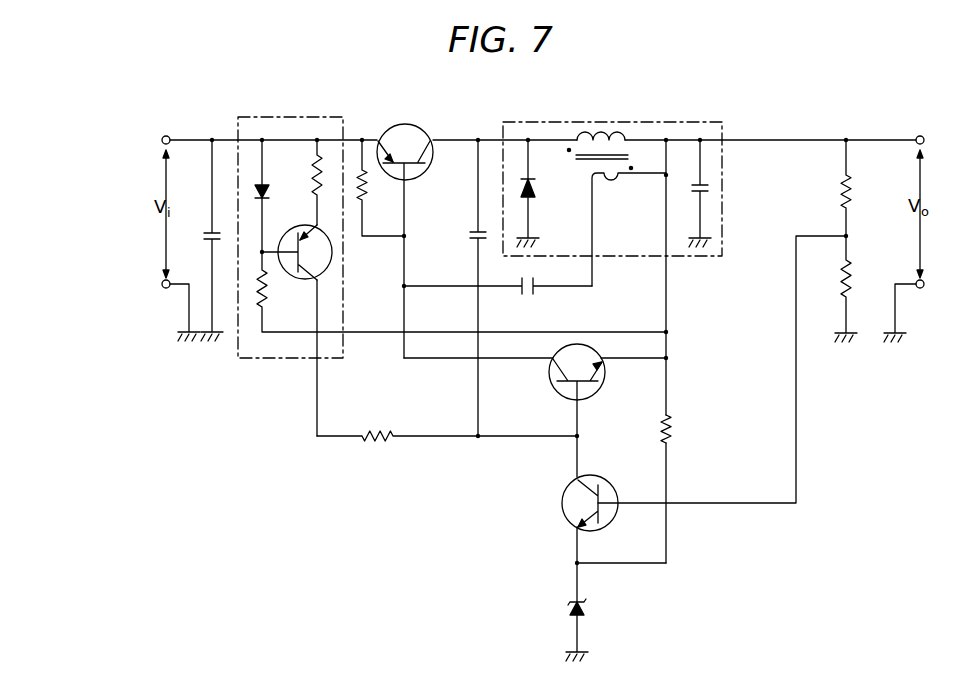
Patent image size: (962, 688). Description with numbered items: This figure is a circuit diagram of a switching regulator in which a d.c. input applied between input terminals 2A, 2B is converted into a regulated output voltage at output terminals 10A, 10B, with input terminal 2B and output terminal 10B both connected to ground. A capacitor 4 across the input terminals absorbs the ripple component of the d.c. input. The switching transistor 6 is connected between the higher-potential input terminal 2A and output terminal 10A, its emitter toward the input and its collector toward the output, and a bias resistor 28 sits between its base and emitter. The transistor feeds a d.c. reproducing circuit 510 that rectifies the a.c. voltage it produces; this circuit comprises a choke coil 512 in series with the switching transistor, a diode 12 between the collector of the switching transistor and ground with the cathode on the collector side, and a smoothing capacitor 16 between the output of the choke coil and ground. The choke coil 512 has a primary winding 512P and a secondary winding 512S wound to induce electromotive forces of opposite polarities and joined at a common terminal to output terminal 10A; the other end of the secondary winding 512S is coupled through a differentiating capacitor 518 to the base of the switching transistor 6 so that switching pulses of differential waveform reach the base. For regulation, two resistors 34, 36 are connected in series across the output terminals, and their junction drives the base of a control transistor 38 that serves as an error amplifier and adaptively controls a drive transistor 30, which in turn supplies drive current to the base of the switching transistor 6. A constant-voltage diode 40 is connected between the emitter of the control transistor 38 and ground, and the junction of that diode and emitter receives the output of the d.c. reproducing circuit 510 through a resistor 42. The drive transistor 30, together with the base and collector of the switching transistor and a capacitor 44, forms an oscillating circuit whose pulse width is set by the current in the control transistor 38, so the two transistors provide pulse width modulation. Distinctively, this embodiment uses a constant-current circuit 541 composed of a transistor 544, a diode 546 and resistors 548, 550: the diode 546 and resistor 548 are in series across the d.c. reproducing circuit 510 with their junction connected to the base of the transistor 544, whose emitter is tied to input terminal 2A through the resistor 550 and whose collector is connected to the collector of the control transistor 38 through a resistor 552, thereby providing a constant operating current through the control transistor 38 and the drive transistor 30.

The input terminal 2A is at (162, 140).
The input terminal 2B is at (162, 284).
The capacitor 4 is at (204, 238).
The constant-current circuit 541 is at (300, 360).
The resistor 550 is at (315, 174).
The diode 546 is at (271, 194).
The transistor 544 is at (286, 282).
The resistor 548 is at (274, 310).
The switching transistor 6 is at (389, 126).
The bias resistor 28 is at (368, 204).
The capacitor 44 is at (468, 234).
The differentiating capacitor 518 is at (529, 295).
The d.c. reproducing circuit 510 is at (722, 258).
The choke coil 512 is at (604, 183).
The primary winding 512P is at (618, 134).
The secondary winding 512S is at (620, 180).
The diode 12 is at (533, 190).
The smoothing capacitor 16 is at (694, 193).
The resistor 34 is at (839, 190).
The resistor 36 is at (850, 272).
The output terminal 10A is at (926, 137).
The output terminal 10B is at (926, 281).
The resistor 42 is at (672, 435).
The drive transistor 30 is at (553, 386).
The control transistor 38 is at (560, 496).
The constant-voltage diode 40 is at (567, 607).
The resistor 552 is at (378, 444).